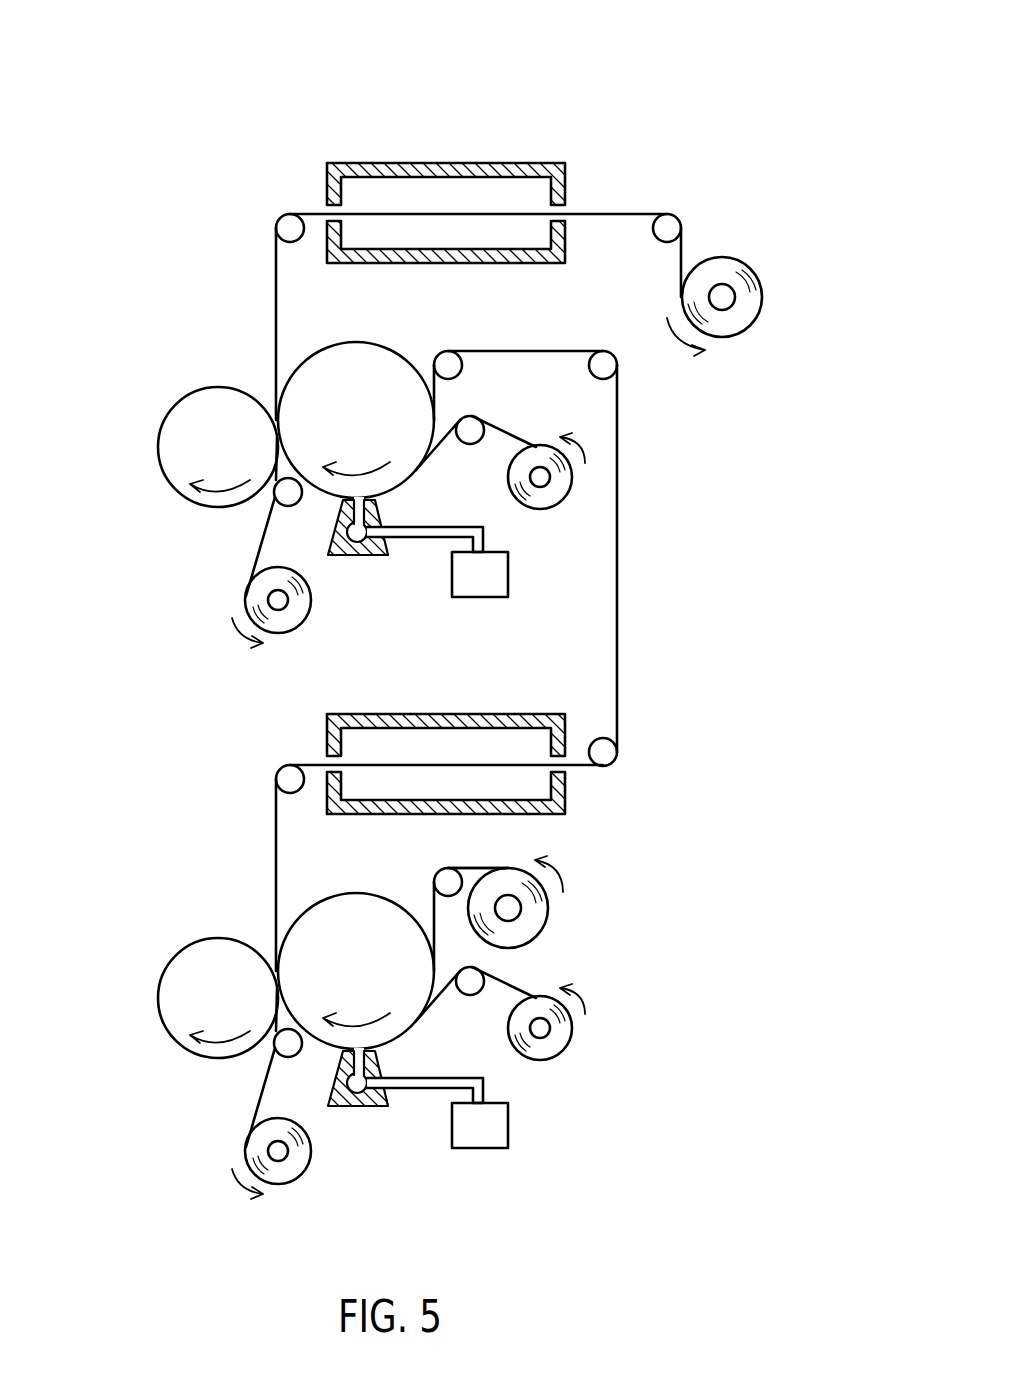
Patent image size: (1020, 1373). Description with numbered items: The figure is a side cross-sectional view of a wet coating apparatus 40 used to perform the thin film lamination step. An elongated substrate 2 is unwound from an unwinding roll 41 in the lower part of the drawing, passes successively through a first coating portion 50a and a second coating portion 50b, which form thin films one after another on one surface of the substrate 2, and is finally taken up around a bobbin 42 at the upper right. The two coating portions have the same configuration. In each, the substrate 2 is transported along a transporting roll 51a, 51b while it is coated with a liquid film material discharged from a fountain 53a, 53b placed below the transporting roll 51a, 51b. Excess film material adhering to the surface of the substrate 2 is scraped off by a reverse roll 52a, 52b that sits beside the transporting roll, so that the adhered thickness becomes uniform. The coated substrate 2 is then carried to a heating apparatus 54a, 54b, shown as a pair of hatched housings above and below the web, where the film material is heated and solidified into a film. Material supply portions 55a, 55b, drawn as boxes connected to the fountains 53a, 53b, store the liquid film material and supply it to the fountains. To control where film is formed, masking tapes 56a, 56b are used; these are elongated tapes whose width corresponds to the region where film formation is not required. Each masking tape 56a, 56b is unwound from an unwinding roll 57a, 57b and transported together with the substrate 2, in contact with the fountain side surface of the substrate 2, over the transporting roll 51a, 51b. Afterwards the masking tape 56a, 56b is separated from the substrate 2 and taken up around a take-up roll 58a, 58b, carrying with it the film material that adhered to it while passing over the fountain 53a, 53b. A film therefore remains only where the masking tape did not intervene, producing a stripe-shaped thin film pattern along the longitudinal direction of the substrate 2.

The wet coating apparatus 40 is at (376, 102).
The elongated substrate 2 is at (478, 866).
The unwinding roll 41 is at (550, 917).
The bobbin 42 is at (738, 258).
The first coating portion 50a is at (135, 716).
The second coating portion 50b is at (135, 163).
The transporting roll 51a is at (352, 894).
The transporting roll 51b is at (352, 343).
The reverse roll 52a is at (205, 939).
The reverse roll 52b is at (205, 388).
The fountain 53a is at (365, 1108).
The fountain 53b is at (365, 557).
The heating apparatus 54a is at (437, 714).
The heating apparatus 54b is at (512, 163).
The material supply portion 55a is at (485, 1148).
The material supply portion 55b is at (485, 597).
The masking tape 56a is at (520, 986).
The masking tape 56b is at (513, 431).
The unwinding roll 57a is at (547, 1054).
The unwinding roll 57b is at (547, 503).
The take-up roll 58a is at (303, 1163).
The take-up roll 58b is at (303, 612).